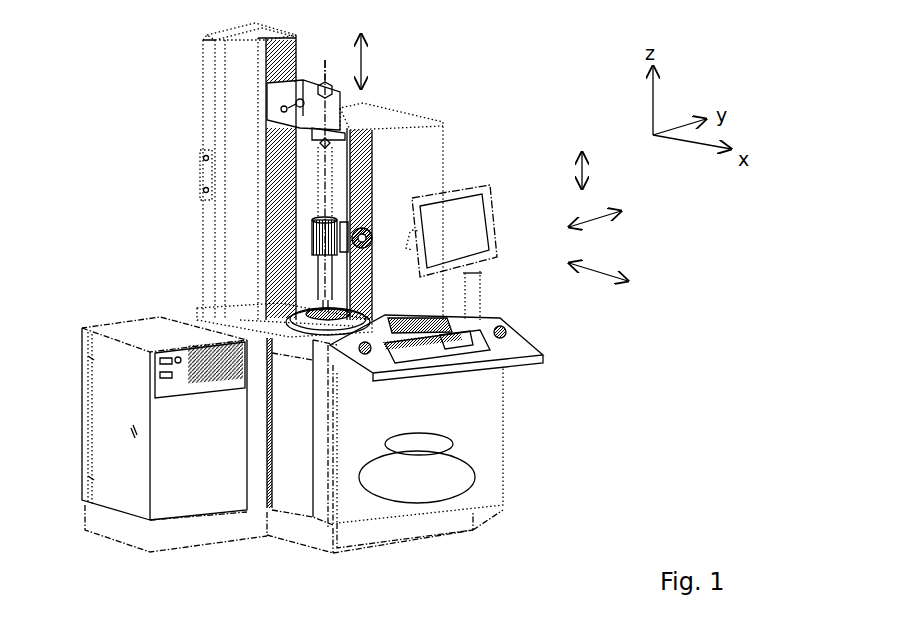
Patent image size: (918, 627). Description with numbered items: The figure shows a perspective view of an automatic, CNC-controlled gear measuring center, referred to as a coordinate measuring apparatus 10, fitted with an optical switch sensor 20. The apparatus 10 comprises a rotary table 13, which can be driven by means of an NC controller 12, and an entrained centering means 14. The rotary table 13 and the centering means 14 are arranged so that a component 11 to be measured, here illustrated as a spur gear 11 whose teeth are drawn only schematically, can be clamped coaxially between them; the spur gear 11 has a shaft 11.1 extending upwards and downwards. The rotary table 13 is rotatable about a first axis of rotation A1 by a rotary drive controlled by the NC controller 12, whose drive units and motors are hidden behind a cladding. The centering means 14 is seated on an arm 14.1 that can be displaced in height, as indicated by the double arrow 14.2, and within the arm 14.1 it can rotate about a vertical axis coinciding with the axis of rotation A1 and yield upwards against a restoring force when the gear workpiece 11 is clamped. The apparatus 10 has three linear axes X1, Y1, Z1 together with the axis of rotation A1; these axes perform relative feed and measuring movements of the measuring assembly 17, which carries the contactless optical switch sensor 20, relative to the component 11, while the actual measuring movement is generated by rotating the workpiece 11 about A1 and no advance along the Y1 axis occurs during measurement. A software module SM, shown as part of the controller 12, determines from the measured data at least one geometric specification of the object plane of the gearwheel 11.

The coordinate measuring apparatus 10 is at (60, 83).
The spur gear 11 is at (313, 237).
The shaft 11.1 is at (318, 282).
The NC controller 12 is at (387, 497).
The rotary table 13 is at (240, 318).
The entrained centering means 14 is at (317, 139).
The arm 14.1 is at (300, 95).
The double arrow 14.2 is at (361, 60).
The measuring assembly 17 is at (368, 240).
The optical switch sensor 20 is at (357, 224).
The axis of rotation A1 is at (330, 60).
The software module SM is at (440, 442).
The linear axis X1 is at (598, 272).
The linear axis Y1 is at (605, 220).
The linear axis Z1 is at (582, 172).